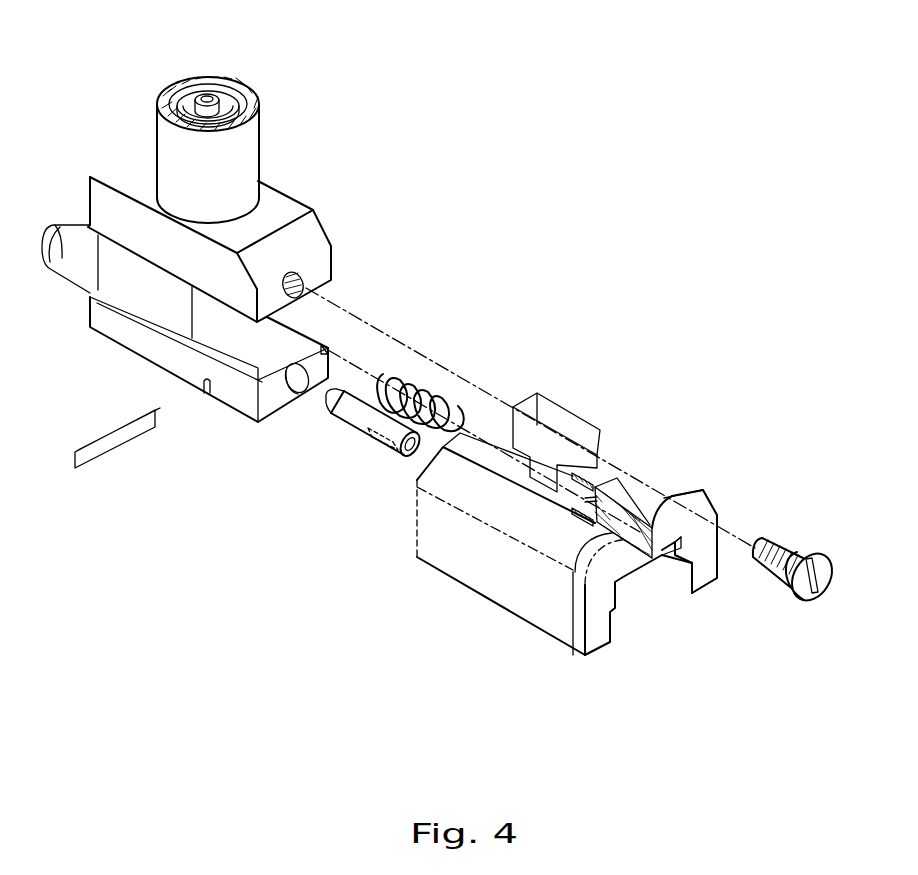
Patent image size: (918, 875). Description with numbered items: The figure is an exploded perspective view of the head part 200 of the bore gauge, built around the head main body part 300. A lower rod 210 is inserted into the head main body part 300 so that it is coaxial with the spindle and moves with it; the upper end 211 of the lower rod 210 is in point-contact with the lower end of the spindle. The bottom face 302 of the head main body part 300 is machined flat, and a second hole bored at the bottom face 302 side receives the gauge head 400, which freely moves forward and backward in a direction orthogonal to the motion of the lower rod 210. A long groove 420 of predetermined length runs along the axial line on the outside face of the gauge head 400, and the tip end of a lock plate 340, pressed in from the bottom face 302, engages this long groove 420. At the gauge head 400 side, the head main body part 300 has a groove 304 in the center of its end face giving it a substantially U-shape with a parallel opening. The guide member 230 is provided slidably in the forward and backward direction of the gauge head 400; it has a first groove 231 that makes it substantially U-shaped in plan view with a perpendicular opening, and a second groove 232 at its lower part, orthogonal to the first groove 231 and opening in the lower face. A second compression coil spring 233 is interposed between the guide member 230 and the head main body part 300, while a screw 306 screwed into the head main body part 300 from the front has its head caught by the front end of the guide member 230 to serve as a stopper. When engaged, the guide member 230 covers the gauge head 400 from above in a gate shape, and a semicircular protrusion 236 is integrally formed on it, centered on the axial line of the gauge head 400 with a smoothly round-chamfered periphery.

The head part 200 is at (499, 270).
The lower rod 210 is at (158, 100).
The upper end 211 is at (207, 100).
The guide member 230 is at (646, 476).
The first groove 231 is at (548, 447).
The second groove 232 is at (660, 588).
The second compression coil spring 233 is at (435, 390).
The semicircular protrusion 236 is at (704, 560).
The head main body part 300 is at (118, 190).
The bottom face 302 is at (122, 350).
The groove 304 is at (245, 340).
The screw 306 is at (811, 553).
The lock plate 340 is at (108, 452).
The gauge head 400 is at (347, 440).
The long groove 420 is at (374, 447).